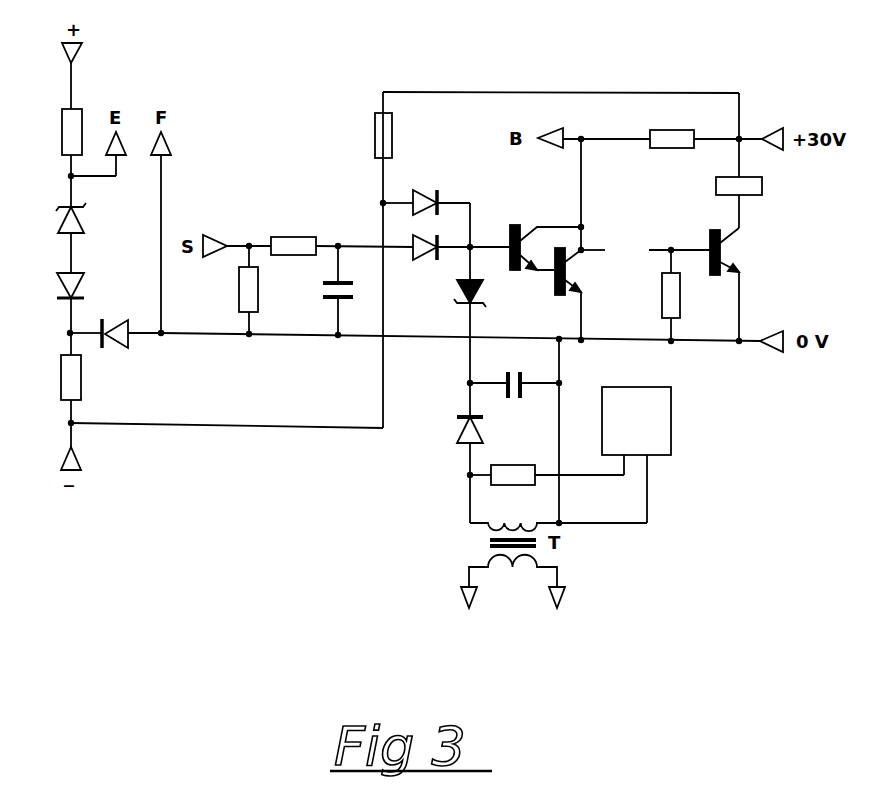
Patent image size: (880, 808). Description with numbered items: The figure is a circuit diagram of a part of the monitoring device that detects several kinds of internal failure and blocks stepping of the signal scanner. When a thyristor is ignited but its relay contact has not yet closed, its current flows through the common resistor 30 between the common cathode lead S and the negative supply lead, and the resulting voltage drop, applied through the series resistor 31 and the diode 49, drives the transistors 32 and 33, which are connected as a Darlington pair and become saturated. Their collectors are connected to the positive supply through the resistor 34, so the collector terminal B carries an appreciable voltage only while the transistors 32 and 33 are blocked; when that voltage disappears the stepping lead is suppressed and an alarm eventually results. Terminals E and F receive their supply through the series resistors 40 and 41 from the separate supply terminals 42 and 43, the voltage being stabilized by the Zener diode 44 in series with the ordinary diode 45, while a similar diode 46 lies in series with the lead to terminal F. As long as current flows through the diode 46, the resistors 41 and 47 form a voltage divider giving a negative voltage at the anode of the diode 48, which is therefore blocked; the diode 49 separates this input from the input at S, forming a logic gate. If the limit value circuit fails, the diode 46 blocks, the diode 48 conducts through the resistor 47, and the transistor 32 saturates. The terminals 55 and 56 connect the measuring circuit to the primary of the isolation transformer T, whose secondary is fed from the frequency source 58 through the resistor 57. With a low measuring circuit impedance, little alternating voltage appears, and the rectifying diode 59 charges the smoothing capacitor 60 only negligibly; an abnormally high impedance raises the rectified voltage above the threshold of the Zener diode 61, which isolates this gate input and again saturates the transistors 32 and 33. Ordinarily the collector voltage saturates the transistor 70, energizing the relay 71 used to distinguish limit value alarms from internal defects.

The common resistor 30 is at (263, 289).
The series resistor 31 is at (293, 234).
The transistor 32 is at (542, 234).
The transistor 33 is at (581, 271).
The resistor 34 is at (672, 151).
The series resistor 40 is at (58, 132).
The series resistor 41 is at (85, 377).
The supply terminal 42 is at (89, 50).
The supply terminal 43 is at (86, 458).
The Zener diode 44 is at (85, 218).
The ordinary diode 45 is at (86, 287).
The diode 46 is at (114, 346).
The resistor 47 is at (401, 135).
The diode 48 is at (428, 190).
The diode 49 is at (426, 261).
The terminal 55 is at (557, 611).
The terminal 56 is at (467, 611).
The resistor 57 is at (513, 461).
The frequency source 58 is at (636, 421).
The rectifying diode 59 is at (451, 430).
The smoothing capacitor 60 is at (515, 370).
The Zener diode 61 is at (484, 293).
The transistor 70 is at (714, 273).
The relay 71 is at (755, 188).